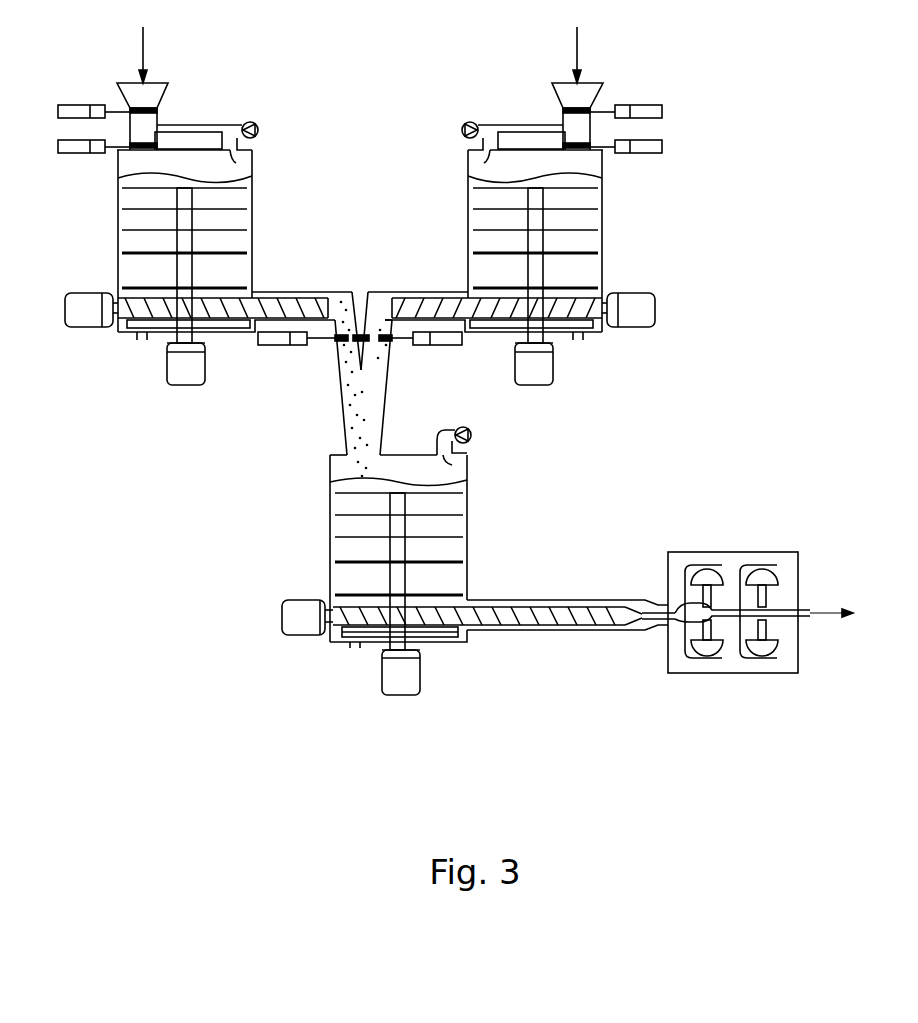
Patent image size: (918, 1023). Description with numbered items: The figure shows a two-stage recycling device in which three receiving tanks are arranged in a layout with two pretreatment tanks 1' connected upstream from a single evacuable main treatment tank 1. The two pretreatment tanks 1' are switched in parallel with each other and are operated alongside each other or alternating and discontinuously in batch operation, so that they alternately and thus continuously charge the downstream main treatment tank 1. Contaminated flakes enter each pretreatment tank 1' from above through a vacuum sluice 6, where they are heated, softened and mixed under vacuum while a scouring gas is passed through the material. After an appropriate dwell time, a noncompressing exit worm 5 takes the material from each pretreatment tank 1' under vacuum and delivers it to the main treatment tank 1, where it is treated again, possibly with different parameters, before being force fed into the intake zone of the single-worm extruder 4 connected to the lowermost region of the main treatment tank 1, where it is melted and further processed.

The main treatment tank 1 is at (458, 572).
The pretreatment tank 1' is at (362, 218).
The single-worm extruder 4 is at (488, 615).
The noncompressing exit worm 5 is at (298, 308).
The vacuum sluice 6 is at (147, 95).